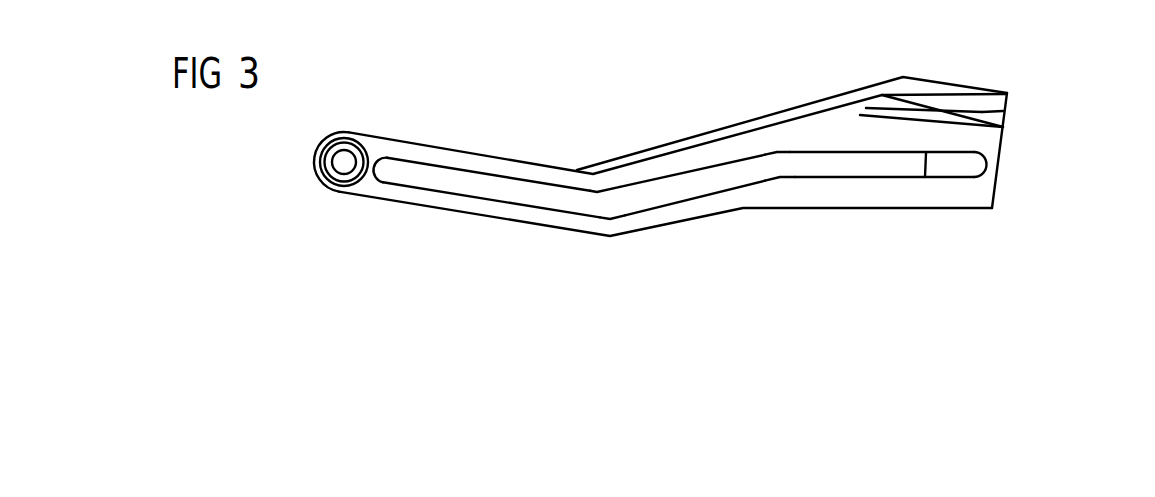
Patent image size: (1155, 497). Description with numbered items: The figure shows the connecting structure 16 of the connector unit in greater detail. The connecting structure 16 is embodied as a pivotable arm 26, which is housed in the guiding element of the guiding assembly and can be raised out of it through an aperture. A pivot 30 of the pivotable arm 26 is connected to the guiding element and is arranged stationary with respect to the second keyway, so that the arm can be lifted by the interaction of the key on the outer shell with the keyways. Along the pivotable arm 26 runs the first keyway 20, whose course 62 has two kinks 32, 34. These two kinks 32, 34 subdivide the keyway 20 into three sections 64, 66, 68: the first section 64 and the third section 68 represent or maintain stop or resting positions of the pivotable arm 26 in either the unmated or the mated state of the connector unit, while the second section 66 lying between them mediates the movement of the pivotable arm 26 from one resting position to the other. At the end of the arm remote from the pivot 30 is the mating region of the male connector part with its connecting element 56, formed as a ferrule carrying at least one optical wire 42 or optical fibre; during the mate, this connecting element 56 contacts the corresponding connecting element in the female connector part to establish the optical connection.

The course 62 is at (415, 106).
The pivot 30 is at (324, 190).
The third section 68 is at (487, 190).
The kink 34 is at (603, 228).
The second section 66 is at (688, 190).
The kink 32 is at (780, 190).
The first keyway 20 is at (812, 152).
The first section 64 is at (877, 165).
The connecting structure 16 is at (792, 108).
The pivotable arm 26 is at (850, 97).
The optical wire 42 is at (1046, 110).
The connecting element 56 is at (982, 111).